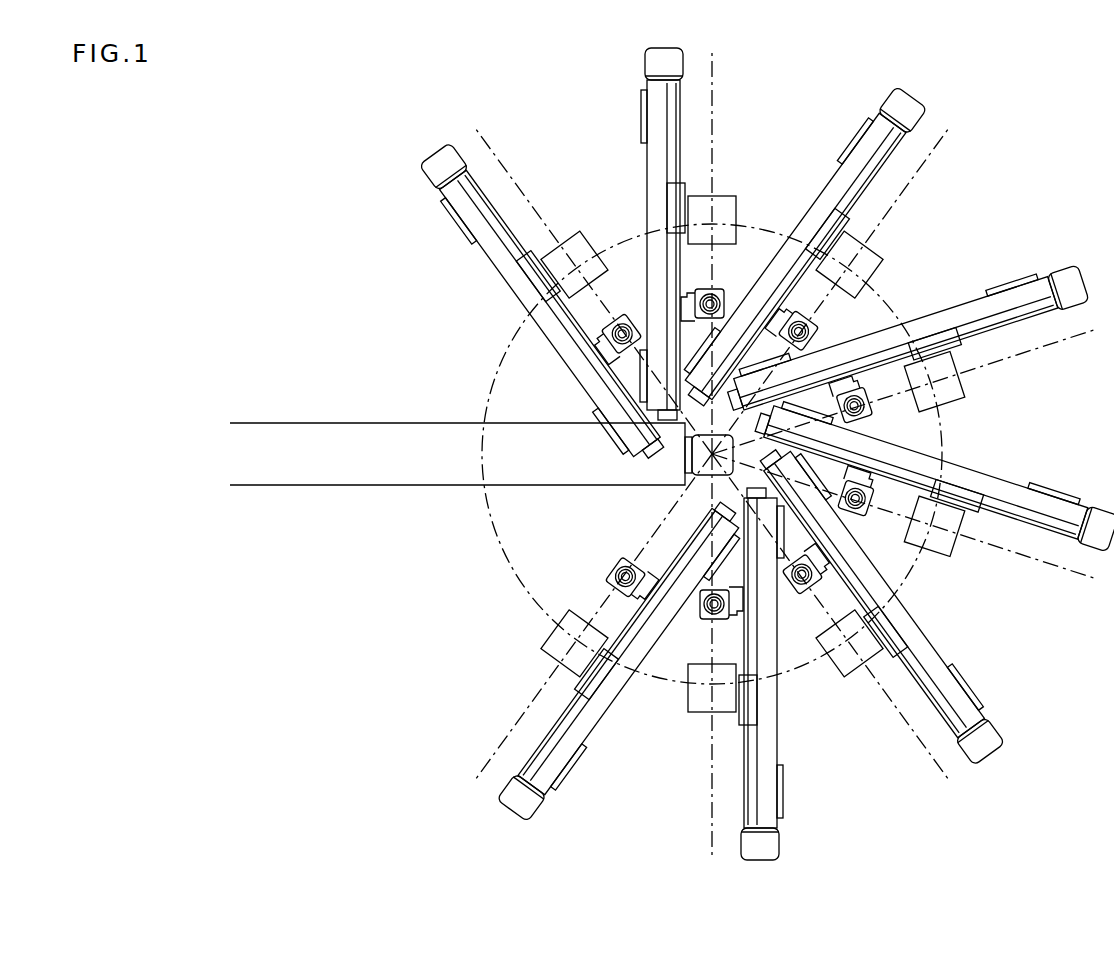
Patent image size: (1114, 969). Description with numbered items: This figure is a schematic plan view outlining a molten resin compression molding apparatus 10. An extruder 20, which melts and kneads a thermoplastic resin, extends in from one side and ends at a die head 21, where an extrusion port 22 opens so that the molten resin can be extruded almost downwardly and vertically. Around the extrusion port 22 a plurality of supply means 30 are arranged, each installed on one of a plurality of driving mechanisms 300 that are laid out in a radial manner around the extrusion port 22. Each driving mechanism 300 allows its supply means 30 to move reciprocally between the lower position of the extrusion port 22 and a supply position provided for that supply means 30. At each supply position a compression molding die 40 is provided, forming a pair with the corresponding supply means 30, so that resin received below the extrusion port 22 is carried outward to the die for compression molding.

The molding apparatus 10 is at (1028, 800).
The extruder 20 is at (273, 458).
The die head 21 is at (690, 440).
The extrusion port 22 is at (690, 474).
The supply means 30 is at (722, 288).
The compression molding die 40 is at (713, 185).
The driving mechanism 300 is at (660, 140).